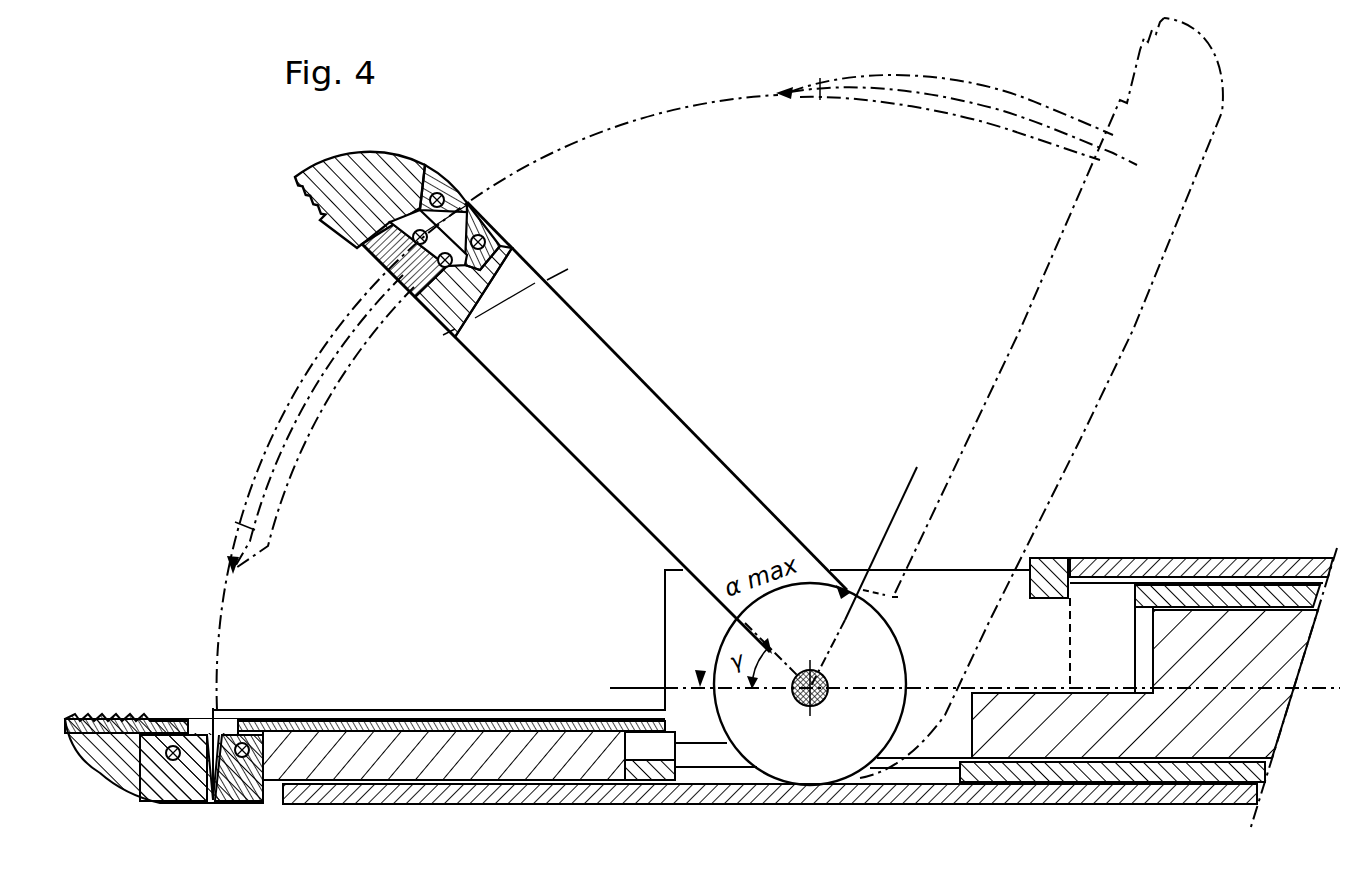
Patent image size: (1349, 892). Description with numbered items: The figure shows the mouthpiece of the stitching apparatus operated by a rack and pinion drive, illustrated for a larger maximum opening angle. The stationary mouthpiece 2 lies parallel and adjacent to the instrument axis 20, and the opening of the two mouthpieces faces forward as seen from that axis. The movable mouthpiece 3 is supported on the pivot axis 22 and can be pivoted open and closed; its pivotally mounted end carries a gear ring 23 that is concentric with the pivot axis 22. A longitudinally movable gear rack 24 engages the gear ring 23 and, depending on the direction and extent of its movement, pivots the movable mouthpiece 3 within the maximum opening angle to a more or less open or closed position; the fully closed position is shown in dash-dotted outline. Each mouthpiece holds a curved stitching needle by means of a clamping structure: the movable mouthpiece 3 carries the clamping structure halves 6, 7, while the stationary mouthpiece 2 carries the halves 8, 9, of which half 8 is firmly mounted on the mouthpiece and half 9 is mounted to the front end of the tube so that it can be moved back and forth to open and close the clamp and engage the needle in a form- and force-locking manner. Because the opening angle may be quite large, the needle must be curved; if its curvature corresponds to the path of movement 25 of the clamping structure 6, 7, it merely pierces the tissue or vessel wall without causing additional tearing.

The stationary mouthpiece 2 is at (430, 762).
The movable mouthpiece 3 is at (613, 393).
The clamping structure half 6 is at (454, 184).
The clamping structure half 7 is at (485, 224).
The clamping structure half 8 is at (183, 788).
The clamping structure half 9 is at (237, 802).
The instrument axis 20 is at (1318, 690).
The pivot axis 22 is at (818, 680).
The gear ring 23 is at (763, 776).
The gear rack 24 is at (913, 778).
The path of movement 25 is at (613, 127).